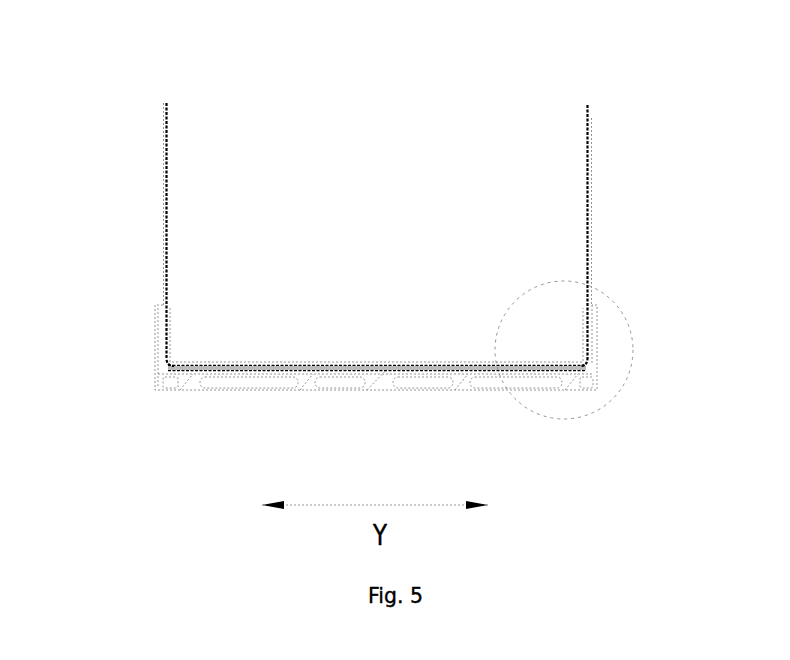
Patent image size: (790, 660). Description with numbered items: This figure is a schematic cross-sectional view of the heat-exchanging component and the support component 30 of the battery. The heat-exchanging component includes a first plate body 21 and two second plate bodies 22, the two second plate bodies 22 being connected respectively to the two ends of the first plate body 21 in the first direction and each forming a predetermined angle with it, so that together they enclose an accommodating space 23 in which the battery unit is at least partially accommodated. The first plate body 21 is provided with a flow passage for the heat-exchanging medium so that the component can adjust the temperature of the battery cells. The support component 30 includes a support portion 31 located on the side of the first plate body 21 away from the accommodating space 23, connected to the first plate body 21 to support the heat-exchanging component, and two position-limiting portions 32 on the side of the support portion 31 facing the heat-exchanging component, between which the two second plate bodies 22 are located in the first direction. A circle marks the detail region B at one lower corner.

The first plate body 21 is at (242, 376).
The second plate body 22 is at (163, 237).
The accommodating space 23 is at (405, 175).
The support component 30 is at (83, 328).
The support portion 31 is at (190, 380).
The position-limiting portion 32 is at (162, 360).
The detail region B is at (648, 325).